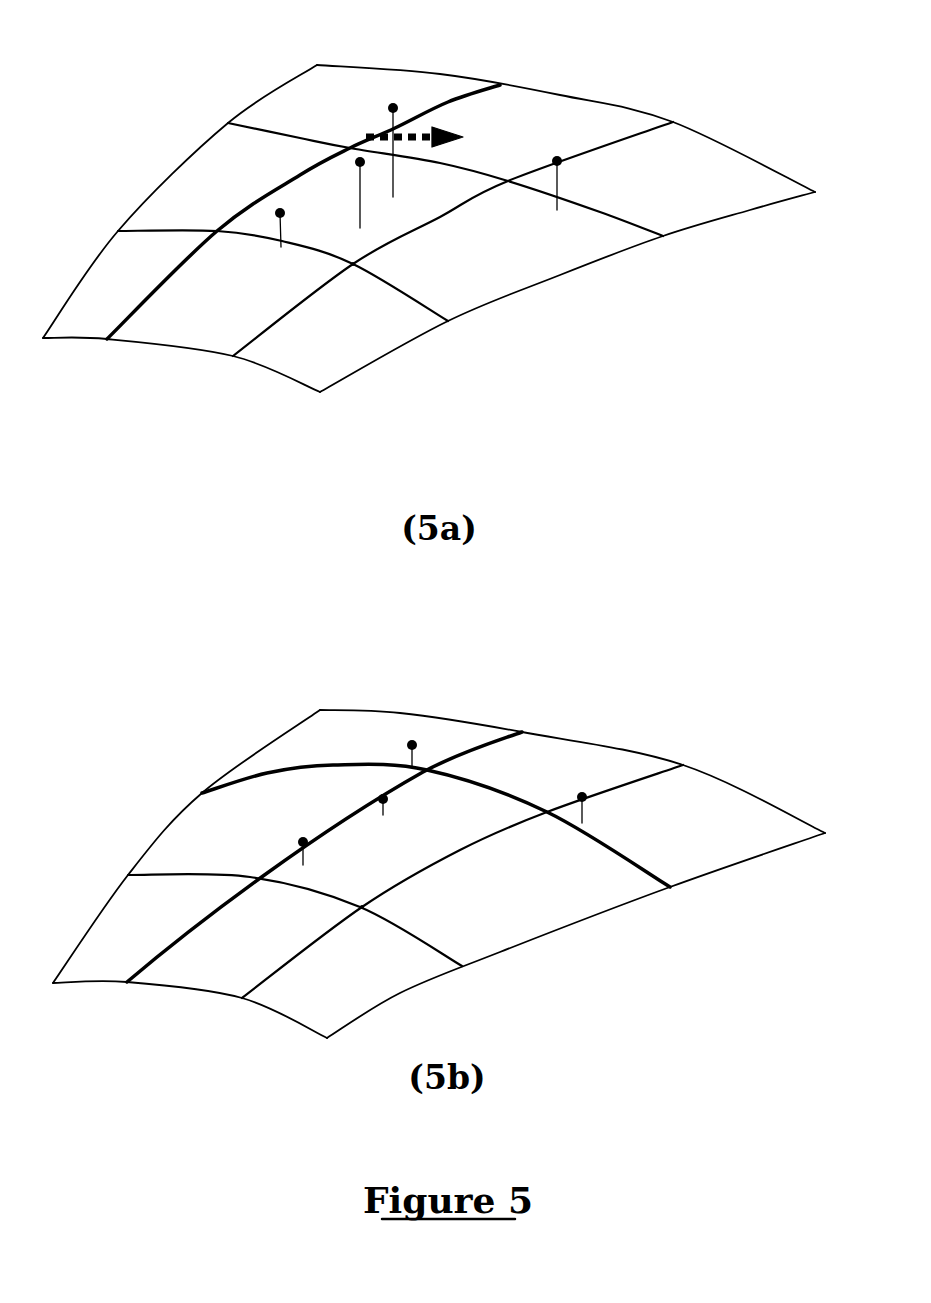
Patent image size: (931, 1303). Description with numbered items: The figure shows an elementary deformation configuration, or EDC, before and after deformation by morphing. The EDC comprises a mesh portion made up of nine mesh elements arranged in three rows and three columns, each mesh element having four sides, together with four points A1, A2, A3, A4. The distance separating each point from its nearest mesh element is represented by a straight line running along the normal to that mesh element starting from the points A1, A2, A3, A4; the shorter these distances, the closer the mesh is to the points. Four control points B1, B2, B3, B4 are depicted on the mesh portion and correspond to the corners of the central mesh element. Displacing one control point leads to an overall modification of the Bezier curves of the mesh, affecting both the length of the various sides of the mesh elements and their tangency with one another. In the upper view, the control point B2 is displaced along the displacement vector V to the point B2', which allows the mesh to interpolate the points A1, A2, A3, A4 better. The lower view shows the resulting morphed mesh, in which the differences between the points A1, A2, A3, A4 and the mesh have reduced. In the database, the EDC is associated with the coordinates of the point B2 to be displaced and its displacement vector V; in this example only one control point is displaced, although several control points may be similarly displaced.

In FIG. 5a, the control point B1 is at (198, 213).
In FIG. 5b, the control point B1 is at (238, 863).
In FIG. 5a, the control point B2 is at (445, 119).
In FIG. 5a, the displaced control point B2' is at (303, 212).
In FIG. 5b, the displaced control point B2' is at (398, 824).
In FIG. 5a, the control point B3 is at (513, 163).
In FIG. 5b, the control point B3 is at (560, 787).
In FIG. 5a, the control point B4 is at (352, 283).
In FIG. 5b, the control point B4 is at (403, 915).
In FIG. 5a, the displacement vector V is at (412, 122).
In FIG. 5a, the point A1 is at (296, 215).
In FIG. 5b, the point A1 is at (290, 838).
In FIG. 5a, the point A2 is at (343, 192).
In FIG. 5b, the point A2 is at (402, 802).
In FIG. 5a, the point A3 is at (412, 139).
In FIG. 5b, the point A3 is at (392, 750).
In FIG. 5a, the point A4 is at (578, 183).
In FIG. 5b, the point A4 is at (602, 808).